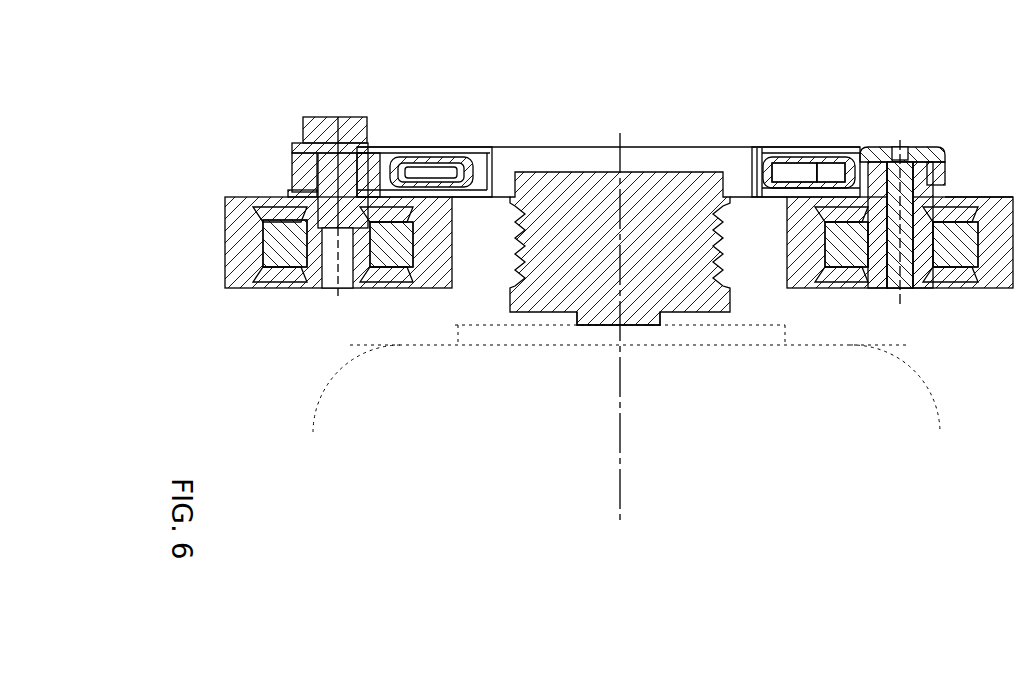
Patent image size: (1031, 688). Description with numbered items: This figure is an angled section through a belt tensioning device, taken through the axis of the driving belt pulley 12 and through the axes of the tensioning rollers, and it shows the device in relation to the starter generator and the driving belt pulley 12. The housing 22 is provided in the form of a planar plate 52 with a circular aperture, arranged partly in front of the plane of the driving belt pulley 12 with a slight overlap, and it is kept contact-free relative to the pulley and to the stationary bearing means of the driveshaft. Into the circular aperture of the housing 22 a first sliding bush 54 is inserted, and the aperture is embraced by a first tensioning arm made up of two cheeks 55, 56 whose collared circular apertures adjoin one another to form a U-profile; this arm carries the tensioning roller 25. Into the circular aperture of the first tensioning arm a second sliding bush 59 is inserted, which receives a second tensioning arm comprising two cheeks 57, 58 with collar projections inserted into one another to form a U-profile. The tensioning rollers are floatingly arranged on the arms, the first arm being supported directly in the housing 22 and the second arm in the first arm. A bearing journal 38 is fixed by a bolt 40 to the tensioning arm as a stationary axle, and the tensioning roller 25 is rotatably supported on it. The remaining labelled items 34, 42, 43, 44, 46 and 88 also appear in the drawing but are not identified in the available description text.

The driving belt pulley 12 is at (655, 180).
The housing 22 is at (240, 235).
The tensioning roller 25 is at (1003, 200).
The lower housing 34 is at (925, 398).
The bearing journal 38 is at (927, 277).
The bolt 40 is at (888, 147).
The bearing assembly 42 is at (271, 122).
The bearing assembly 43 is at (938, 87).
The bolt 44 is at (318, 122).
The threaded connection 46 is at (668, 322).
The planar plate 52 is at (827, 158).
The first sliding bush 54 is at (766, 158).
The cheek 55 is at (802, 158).
The cheek 56 is at (783, 158).
The cheek 57 is at (413, 158).
The cheek 58 is at (392, 158).
The second sliding bush 59 is at (468, 158).
The bearing 88 is at (313, 262).